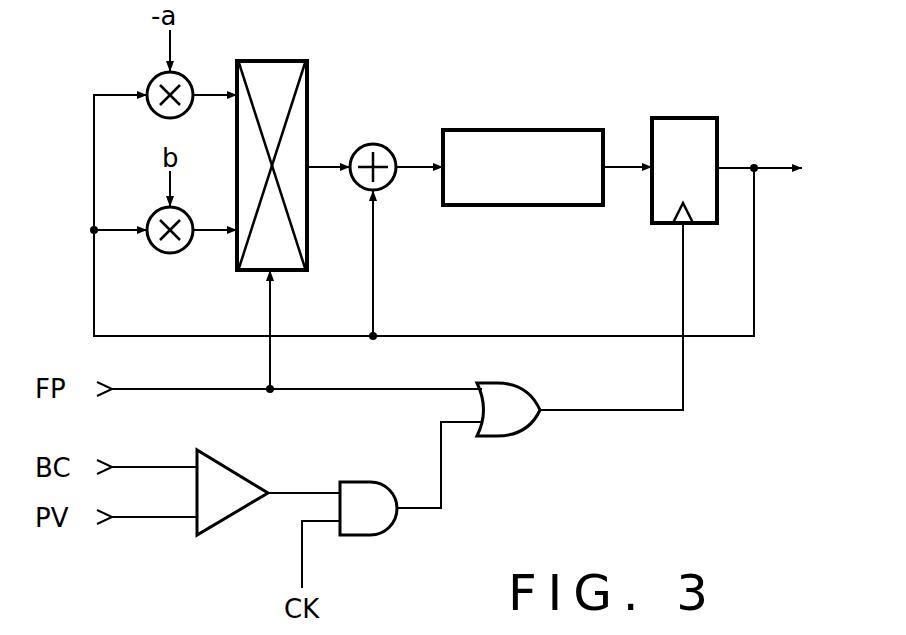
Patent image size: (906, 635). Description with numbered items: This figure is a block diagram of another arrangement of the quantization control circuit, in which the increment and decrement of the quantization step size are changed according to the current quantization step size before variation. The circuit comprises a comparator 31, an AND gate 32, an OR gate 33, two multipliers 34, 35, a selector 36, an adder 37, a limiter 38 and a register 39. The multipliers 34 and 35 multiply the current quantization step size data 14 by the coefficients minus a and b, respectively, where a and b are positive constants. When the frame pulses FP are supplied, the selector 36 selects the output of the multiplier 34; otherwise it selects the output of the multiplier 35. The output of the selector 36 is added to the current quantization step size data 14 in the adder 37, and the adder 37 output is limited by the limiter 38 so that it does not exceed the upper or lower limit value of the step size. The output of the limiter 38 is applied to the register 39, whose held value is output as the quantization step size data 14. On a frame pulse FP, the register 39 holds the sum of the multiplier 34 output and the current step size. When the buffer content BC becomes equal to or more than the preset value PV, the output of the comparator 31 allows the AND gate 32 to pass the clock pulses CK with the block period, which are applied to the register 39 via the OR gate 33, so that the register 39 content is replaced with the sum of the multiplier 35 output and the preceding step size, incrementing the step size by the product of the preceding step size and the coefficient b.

The quantization step size data 14 is at (775, 168).
The comparator 31 is at (238, 465).
The AND gate 32 is at (358, 482).
The OR gate 33 is at (507, 437).
The multiplier 34 is at (154, 78).
The multiplier 35 is at (152, 247).
The selector 36 is at (270, 61).
The adder 37 is at (373, 144).
The limiter 38 is at (515, 130).
The register 39 is at (683, 118).